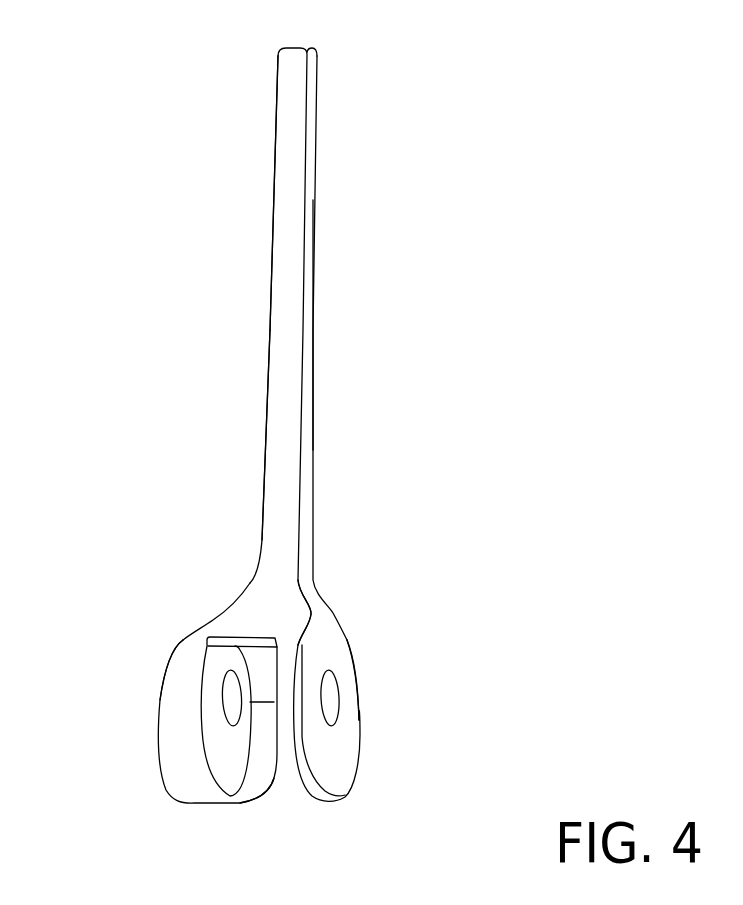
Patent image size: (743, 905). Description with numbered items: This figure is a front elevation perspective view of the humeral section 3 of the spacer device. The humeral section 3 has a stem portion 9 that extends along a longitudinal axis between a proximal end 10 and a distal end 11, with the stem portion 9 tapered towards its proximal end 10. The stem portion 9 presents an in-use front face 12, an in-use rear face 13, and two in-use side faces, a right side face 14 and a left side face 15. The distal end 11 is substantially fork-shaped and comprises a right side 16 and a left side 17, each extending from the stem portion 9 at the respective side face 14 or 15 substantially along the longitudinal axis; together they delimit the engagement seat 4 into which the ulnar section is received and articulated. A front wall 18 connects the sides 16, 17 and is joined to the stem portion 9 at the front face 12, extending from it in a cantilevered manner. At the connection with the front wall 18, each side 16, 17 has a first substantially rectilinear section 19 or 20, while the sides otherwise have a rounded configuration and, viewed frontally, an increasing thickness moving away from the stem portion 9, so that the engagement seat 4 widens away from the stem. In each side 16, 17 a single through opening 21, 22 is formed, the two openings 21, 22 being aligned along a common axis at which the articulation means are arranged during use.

The humeral section 3 is at (452, 355).
The engagement seat 4 is at (258, 753).
The stem portion 9 is at (313, 430).
The proximal end 10 is at (317, 46).
The distal end 11 is at (352, 645).
The front face 12 is at (270, 348).
The rear face 13 is at (317, 195).
The right side face 14 is at (312, 318).
The left side face 15 is at (272, 213).
The right side 16 is at (345, 740).
The left side 17 is at (155, 737).
The front wall 18 is at (250, 618).
The first rectilinear section 19 is at (313, 630).
The first rectilinear section 20 is at (185, 638).
The through opening 21 is at (333, 710).
The through opening 22 is at (230, 700).